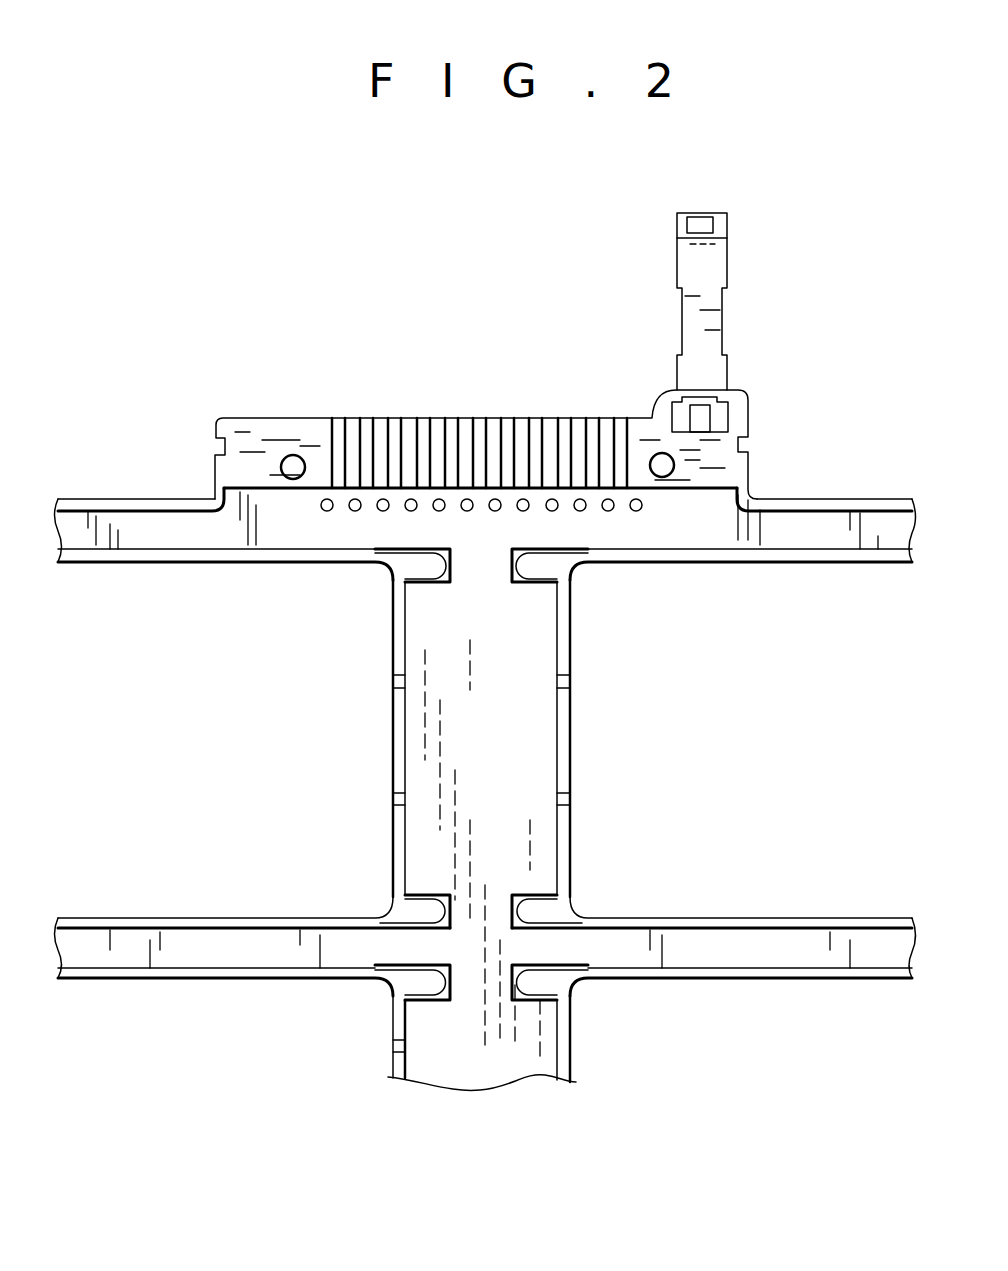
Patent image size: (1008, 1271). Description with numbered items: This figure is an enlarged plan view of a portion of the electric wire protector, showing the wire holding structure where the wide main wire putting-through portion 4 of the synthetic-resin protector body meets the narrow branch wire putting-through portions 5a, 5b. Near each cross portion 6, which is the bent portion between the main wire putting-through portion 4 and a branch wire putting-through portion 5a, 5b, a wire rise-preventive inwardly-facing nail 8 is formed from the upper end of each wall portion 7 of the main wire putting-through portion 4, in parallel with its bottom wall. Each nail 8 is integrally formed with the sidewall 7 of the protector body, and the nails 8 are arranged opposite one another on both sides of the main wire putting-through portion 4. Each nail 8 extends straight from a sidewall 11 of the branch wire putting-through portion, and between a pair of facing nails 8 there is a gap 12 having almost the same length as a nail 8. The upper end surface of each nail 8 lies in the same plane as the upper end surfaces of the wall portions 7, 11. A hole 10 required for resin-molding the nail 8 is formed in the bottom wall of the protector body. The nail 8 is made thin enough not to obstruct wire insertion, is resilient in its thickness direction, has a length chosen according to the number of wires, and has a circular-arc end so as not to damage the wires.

The main wire putting-through portion 4 is at (527, 819).
The branch wire putting-through portion 5a is at (821, 562).
The branch wire putting-through portion 5b is at (799, 981).
The cross portion 6 is at (580, 563).
The wall portion 7 is at (572, 715).
The wire rise-preventive inwardly-facing nail 8 is at (430, 568).
The hole 10 is at (481, 610).
The sidewall of the branch wire putting-through portion 11 is at (710, 565).
The gap 12 is at (473, 550).